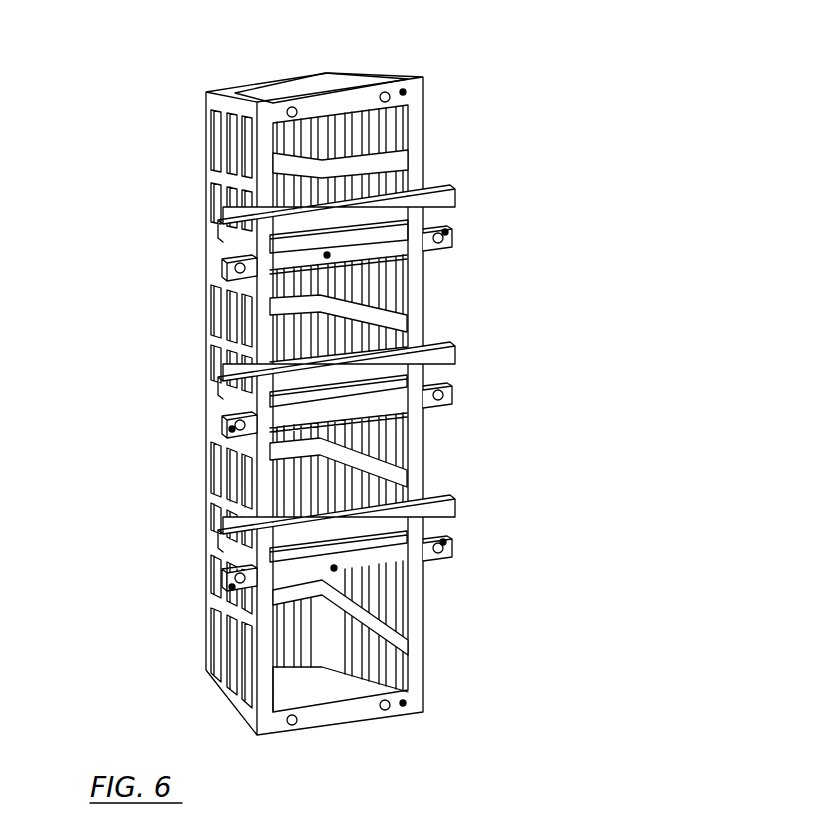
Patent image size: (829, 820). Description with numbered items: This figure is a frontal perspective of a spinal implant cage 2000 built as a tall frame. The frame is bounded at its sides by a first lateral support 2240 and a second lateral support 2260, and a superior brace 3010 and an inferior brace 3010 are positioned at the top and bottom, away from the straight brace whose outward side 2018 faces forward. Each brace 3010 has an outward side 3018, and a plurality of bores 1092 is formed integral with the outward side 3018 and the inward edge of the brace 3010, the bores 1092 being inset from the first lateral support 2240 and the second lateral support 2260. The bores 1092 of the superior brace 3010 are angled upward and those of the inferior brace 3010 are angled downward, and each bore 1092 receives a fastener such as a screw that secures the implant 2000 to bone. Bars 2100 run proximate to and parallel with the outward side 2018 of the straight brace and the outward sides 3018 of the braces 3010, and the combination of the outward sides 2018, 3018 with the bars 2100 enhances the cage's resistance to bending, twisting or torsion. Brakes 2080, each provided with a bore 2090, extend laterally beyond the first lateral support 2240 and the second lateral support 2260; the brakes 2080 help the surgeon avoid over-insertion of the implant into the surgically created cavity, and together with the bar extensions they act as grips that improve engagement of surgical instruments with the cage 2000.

The cage 2000 is at (556, 76).
The brace 3010 is at (253, 97).
The bore 1092 is at (400, 758).
The outward side 3018 is at (405, 91).
The first lateral support 2240 is at (433, 160).
The bar 2100 is at (459, 195).
The brake 2080 is at (446, 232).
The bore 2090 is at (447, 245).
The second lateral support 2260 is at (203, 240).
The outward side 2018 is at (336, 569).